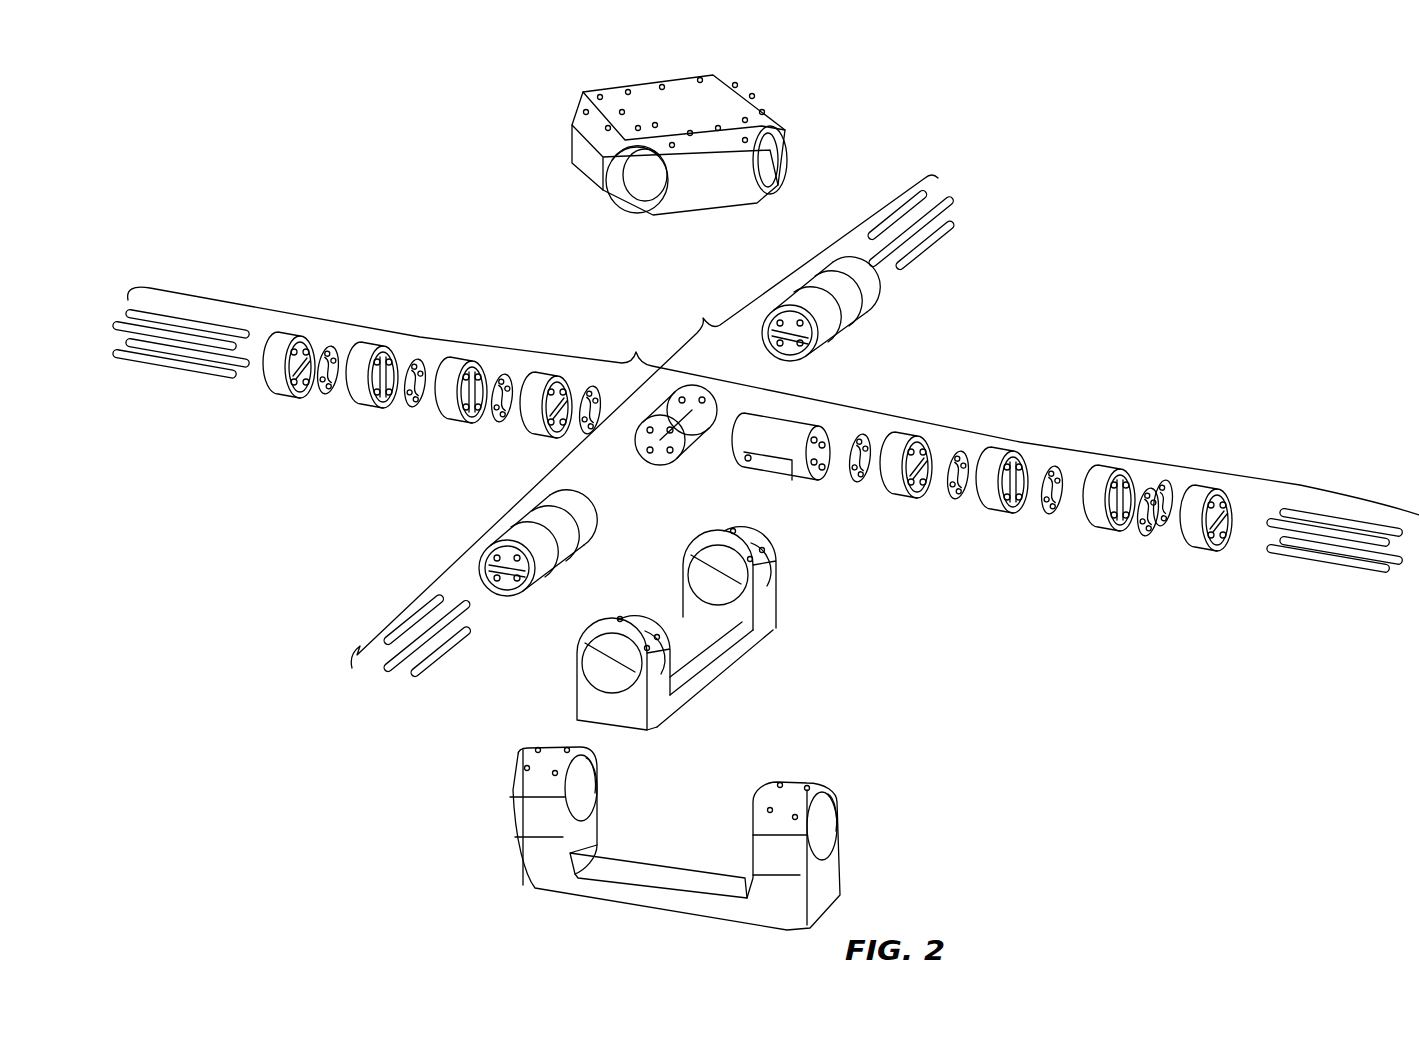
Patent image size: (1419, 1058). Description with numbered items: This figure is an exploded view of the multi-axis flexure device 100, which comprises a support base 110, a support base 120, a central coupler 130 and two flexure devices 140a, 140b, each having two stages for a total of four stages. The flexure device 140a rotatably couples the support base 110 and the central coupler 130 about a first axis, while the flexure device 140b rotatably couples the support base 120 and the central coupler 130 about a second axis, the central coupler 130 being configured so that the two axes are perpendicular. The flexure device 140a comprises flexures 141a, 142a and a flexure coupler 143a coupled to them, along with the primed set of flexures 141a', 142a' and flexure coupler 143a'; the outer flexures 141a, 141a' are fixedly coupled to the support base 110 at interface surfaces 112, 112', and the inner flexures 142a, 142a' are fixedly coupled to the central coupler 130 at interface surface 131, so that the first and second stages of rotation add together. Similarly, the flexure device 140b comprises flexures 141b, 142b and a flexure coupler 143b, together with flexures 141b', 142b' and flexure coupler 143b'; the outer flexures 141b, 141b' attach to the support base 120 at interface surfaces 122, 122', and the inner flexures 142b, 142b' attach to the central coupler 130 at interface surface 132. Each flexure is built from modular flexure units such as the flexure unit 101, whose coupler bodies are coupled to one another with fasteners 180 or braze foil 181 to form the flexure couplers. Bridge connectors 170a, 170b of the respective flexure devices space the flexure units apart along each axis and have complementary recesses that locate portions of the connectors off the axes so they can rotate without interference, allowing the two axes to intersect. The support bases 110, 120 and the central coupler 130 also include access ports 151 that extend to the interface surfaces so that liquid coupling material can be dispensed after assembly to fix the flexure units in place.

The multi-axis flexure device 100 is at (425, 100).
The central coupler 130 is at (651, 94).
The interface surface 131 is at (772, 162).
The interface surface 132 is at (632, 185).
The access ports 151 is at (732, 95).
The flexure device 140a is at (765, 401).
The flexure device 140b is at (644, 421).
The flexure 141a' is at (345, 394).
The flexure 142a' is at (517, 423).
The flexure coupler 143a' is at (602, 448).
The bridge connector 170b is at (697, 443).
The bridge connector 170a is at (773, 443).
The braze foil 181 is at (1163, 488).
The flexure unit 101 is at (1203, 493).
The flexure 142a is at (937, 495).
The flexure 141a is at (1129, 531).
The flexure coupler 143a is at (1252, 561).
The fasteners 180 is at (1330, 566).
The flexure coupler 143b' is at (778, 347).
The flexure 142b' is at (837, 323).
The flexure 141b' is at (864, 275).
The flexure coupler 143b is at (507, 591).
The flexure 141b is at (485, 586).
The flexure 142b is at (566, 546).
The interface surface 122 is at (591, 667).
The interface surface 122' is at (763, 574).
The support base 120 is at (722, 668).
The interface surface 112 is at (864, 826).
The interface surface 112' is at (614, 788).
The support base 110 is at (588, 890).